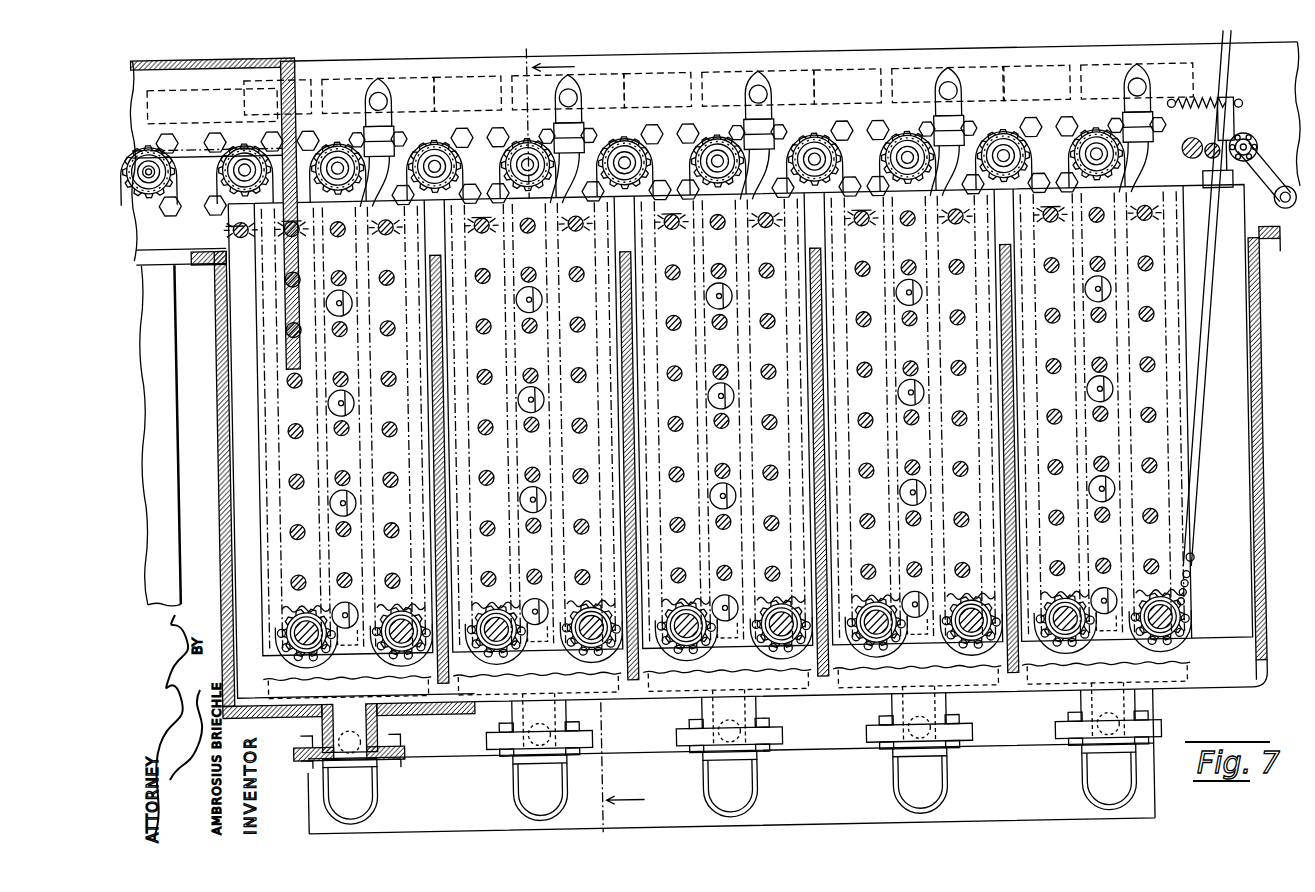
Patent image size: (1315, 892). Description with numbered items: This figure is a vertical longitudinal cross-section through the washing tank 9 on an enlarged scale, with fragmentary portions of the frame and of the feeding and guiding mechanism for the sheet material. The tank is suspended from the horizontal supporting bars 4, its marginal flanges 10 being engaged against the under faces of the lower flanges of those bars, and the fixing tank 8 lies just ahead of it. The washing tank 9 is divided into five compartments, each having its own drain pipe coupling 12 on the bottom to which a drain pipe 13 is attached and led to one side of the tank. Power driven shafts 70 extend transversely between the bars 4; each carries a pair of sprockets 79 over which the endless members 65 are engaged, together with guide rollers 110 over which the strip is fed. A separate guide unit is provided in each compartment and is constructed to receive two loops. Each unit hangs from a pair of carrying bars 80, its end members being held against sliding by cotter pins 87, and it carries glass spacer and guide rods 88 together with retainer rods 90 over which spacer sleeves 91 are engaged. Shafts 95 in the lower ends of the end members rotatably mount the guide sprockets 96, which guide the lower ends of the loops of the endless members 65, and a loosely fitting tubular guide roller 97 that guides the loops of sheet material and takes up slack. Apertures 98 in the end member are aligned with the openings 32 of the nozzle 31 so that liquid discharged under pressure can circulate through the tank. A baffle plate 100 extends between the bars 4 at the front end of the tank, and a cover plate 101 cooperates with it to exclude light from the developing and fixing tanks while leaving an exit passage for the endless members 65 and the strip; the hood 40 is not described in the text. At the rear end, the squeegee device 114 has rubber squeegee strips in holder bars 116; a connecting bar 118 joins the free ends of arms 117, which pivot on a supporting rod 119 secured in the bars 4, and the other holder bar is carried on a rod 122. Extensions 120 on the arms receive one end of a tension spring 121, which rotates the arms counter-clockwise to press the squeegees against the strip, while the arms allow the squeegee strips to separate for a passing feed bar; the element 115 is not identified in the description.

The supporting bars 4 is at (1272, 241).
The fixing tank 8 is at (159, 435).
The washing tank 9 is at (219, 478).
The marginal flanges 10 is at (206, 258).
The drain pipe coupling 12 is at (376, 708).
The drain pipe 13 is at (730, 784).
The nozzle 31 is at (708, 398).
The openings 32 is at (329, 398).
The cover 40 is at (508, 78).
The endless members 65 is at (252, 150).
The power driven shafts 70 is at (1103, 150).
The sprockets 79 is at (166, 165).
The carrying bars 80 is at (238, 226).
The cotter pins 87 is at (238, 221).
The glass spacer and guide rods 88 is at (721, 397).
The retainer rods 90 is at (1156, 238).
The spacer sleeves 91 is at (722, 398).
The shafts 95 is at (272, 618).
The guide sprockets 96 is at (733, 614).
The guide roller 97 is at (733, 652).
The apertures 98 is at (356, 298).
The baffle plate 100 is at (295, 361).
The cover plate 101 is at (252, 75).
The guide rollers 110 is at (1038, 152).
The squeegee device 114 is at (1264, 159).
The bearing ring 115 is at (1253, 148).
The holder bars 116 is at (1228, 197).
The arms 117 is at (1280, 200).
The connecting bar 118 is at (1262, 150).
The supporting rod 119 is at (1292, 197).
The extensions 120 is at (1241, 128).
The tension spring 121 is at (1216, 108).
The rod 122 is at (1197, 137).